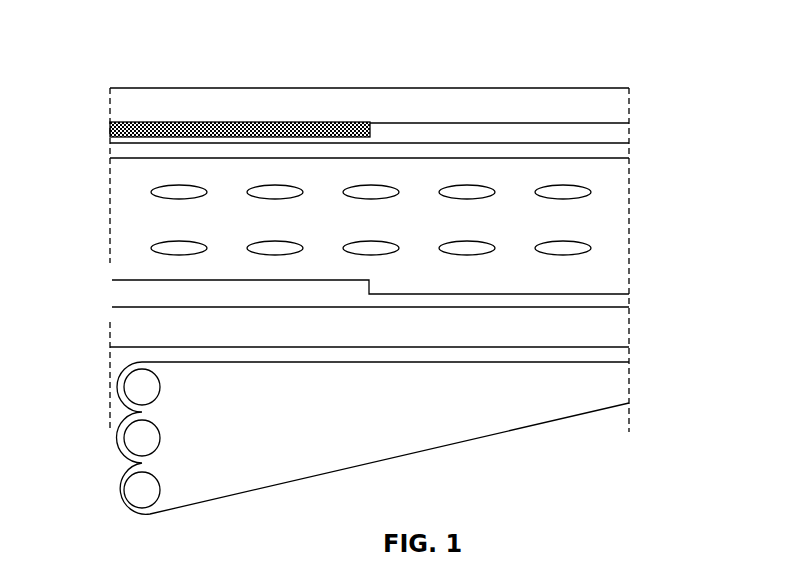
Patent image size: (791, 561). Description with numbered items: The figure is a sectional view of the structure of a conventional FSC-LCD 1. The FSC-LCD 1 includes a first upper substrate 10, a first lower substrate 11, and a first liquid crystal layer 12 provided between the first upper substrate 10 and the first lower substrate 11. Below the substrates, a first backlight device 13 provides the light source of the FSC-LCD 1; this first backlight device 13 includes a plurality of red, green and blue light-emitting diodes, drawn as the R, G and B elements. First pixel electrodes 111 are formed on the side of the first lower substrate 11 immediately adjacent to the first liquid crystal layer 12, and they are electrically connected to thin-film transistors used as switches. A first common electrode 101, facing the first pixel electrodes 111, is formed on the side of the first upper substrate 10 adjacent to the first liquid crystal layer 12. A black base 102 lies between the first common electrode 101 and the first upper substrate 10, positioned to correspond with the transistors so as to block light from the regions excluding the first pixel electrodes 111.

The FSC-LCD 1 is at (63, 92).
The first upper substrate 10 is at (629, 107).
The first common electrode 101 is at (625, 150).
The black base 102 is at (232, 122).
The first lower substrate 11 is at (625, 333).
The first pixel electrodes 111 is at (625, 297).
The first liquid crystal layer 12 is at (625, 225).
The first backlight device 13 is at (456, 437).